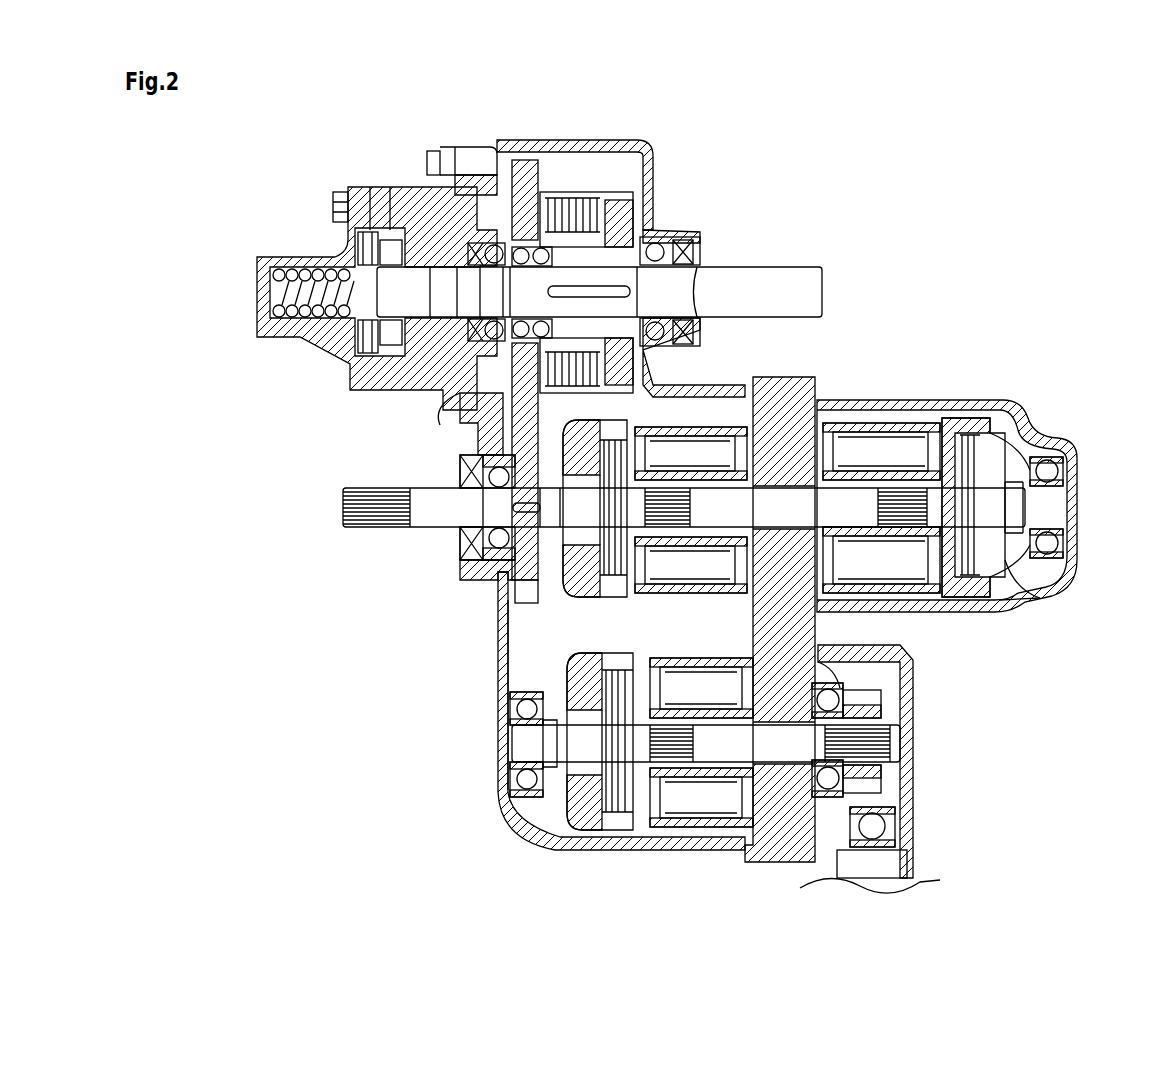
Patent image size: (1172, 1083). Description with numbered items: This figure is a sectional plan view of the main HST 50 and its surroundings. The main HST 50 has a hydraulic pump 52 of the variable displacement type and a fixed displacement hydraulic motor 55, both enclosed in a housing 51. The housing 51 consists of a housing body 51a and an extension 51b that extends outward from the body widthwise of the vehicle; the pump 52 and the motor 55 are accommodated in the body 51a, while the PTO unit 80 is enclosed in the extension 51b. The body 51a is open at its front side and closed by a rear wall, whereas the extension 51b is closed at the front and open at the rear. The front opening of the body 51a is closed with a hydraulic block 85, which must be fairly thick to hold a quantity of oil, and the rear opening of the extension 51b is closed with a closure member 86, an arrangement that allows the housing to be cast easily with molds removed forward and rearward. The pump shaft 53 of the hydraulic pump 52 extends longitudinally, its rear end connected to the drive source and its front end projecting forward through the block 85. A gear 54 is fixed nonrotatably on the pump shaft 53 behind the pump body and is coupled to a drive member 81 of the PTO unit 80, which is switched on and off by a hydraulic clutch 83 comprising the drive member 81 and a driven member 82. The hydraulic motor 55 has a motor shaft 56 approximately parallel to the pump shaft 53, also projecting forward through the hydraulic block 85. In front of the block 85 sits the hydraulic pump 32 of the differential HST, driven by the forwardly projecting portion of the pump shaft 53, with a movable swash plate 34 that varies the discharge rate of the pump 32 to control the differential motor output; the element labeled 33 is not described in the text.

The hydraulic pump 32 is at (995, 388).
The bearing / shaft end 33 is at (1000, 505).
The movable swash plate 34 is at (1027, 598).
The main HST 50 is at (485, 664).
The housing 51 is at (498, 621).
The housing body 51a is at (500, 647).
The housing extension 51b is at (490, 404).
The hydraulic pump 52 is at (565, 594).
The pump shaft 53 is at (440, 517).
The gear 54 is at (522, 443).
The hydraulic motor 55 is at (569, 830).
The motor shaft 56 is at (570, 745).
The PTO unit 80 is at (664, 156).
The drive member 81 is at (500, 152).
The driven member 82 is at (635, 242).
The hydraulic clutch 83 is at (570, 185).
The hydraulic block 85 is at (795, 385).
The closure member 86 is at (412, 200).